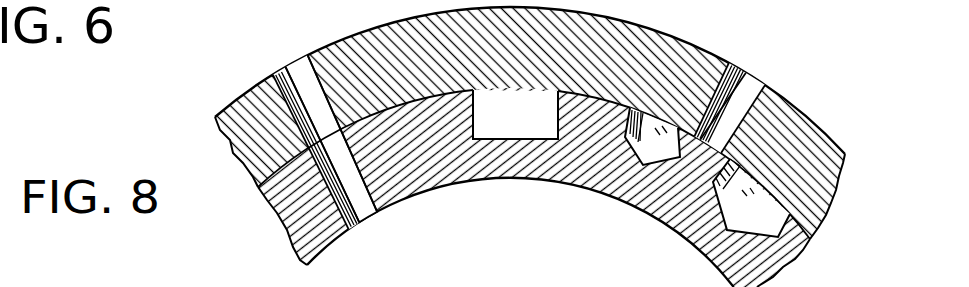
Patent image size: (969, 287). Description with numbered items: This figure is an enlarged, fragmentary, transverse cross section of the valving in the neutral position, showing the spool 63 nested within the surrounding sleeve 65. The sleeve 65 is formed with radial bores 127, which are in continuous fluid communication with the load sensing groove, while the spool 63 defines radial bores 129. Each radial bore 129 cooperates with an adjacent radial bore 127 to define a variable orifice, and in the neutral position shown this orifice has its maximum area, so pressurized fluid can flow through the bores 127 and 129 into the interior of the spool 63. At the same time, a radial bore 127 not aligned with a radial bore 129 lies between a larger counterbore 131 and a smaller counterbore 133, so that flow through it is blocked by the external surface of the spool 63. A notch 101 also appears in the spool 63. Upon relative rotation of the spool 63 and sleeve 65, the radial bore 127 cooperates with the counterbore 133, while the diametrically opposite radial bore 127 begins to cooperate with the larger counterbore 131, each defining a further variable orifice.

The spool 63 is at (520, 160).
The sleeve 65 is at (640, 47).
The notch 101 is at (497, 110).
The radial bores 127 is at (300, 72).
The radial bores 129 is at (370, 200).
The larger counterbore 131 is at (768, 210).
The smaller counterbore 133 is at (667, 133).